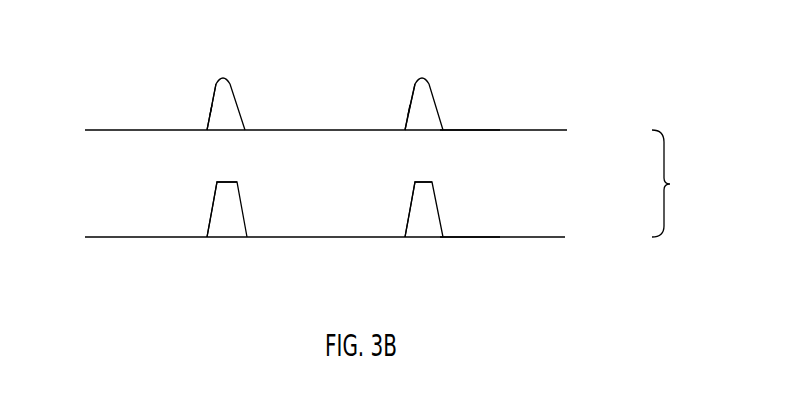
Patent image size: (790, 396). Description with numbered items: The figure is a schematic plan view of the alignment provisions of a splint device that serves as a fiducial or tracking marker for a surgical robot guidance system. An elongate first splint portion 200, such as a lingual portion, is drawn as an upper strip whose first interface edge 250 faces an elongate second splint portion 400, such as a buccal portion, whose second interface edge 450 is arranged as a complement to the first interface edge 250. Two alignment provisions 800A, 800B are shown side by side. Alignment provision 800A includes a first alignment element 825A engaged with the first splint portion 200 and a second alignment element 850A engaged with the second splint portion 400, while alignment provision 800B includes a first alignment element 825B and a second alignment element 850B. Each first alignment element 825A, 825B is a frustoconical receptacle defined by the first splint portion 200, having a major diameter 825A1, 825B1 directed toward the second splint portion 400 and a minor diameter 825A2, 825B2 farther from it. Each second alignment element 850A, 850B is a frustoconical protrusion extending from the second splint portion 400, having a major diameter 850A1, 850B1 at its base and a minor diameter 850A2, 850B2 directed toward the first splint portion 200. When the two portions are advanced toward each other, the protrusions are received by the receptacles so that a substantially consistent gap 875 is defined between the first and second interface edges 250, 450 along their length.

The first splint portion 200 is at (515, 107).
The second splint portion 400 is at (557, 284).
The first interface edge 250 is at (468, 133).
The second interface edge 450 is at (468, 234).
The first alignment element 825B is at (224, 86).
The minor diameter 825B2 is at (207, 75).
The major diameter 825B1 is at (201, 127).
The first alignment element 825A is at (423, 86).
The minor diameter 825A2 is at (405, 75).
The major diameter 825A1 is at (399, 127).
The second alignment element 850B is at (230, 216).
The minor diameter 850B2 is at (207, 182).
The major diameter 850B1 is at (201, 234).
The second alignment element 850A is at (423, 216).
The minor diameter 850A2 is at (405, 182).
The major diameter 850A1 is at (399, 234).
The alignment provision 800A is at (451, 170).
The alignment provision 800B is at (160, 184).
The gap 875 is at (681, 183).